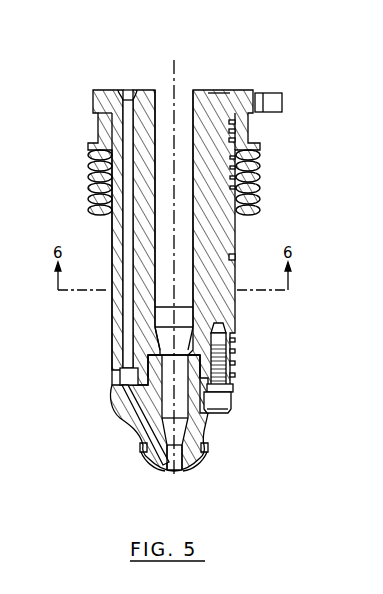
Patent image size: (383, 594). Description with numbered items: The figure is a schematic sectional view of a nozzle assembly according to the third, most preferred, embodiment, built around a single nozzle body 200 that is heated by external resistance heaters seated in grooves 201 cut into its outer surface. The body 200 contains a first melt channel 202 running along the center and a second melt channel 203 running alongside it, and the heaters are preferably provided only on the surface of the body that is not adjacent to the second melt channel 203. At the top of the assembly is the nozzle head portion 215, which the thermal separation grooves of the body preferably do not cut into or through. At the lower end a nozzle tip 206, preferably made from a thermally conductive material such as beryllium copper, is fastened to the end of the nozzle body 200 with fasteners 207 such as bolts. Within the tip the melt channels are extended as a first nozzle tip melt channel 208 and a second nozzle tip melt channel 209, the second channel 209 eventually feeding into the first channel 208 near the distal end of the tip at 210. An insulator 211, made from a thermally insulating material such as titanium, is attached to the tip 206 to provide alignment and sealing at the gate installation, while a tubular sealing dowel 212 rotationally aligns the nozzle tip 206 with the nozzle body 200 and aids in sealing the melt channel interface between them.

The nozzle body 200 is at (213, 112).
The groove 201 is at (235, 258).
The first melt channel 202 is at (184, 100).
The second melt channel 203 is at (133, 100).
The nozzle tip 206 is at (125, 410).
The fasteners 207 is at (227, 402).
The first nozzle tip melt channel 208 is at (182, 412).
The second nozzle tip melt channel 209 is at (157, 467).
The distal end junction 210 is at (175, 472).
The insulator 211 is at (212, 445).
The tubular sealing dowel 212 is at (118, 375).
The nozzle head portion 215 is at (101, 91).